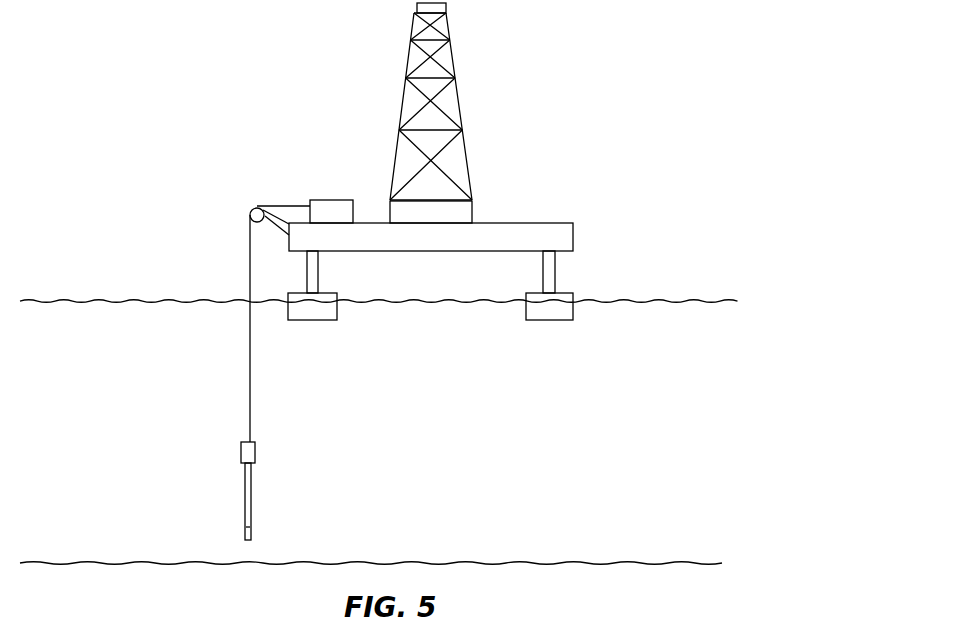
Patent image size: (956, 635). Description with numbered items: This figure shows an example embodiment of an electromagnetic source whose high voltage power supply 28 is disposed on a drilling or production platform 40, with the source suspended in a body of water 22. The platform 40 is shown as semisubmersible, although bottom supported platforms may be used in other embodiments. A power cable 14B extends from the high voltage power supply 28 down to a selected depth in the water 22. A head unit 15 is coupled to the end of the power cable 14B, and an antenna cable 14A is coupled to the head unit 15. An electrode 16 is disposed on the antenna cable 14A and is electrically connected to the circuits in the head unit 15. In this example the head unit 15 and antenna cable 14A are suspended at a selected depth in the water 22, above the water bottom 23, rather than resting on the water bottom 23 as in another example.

The drilling or production platform 40 is at (462, 108).
The high voltage power supply 28 is at (331, 199).
The power cable 14B is at (249, 352).
The head unit 15 is at (255, 450).
The antenna cable 14A is at (251, 502).
The electrode 16 is at (252, 526).
The water 22 is at (379, 365).
The water bottom 23 is at (130, 561).